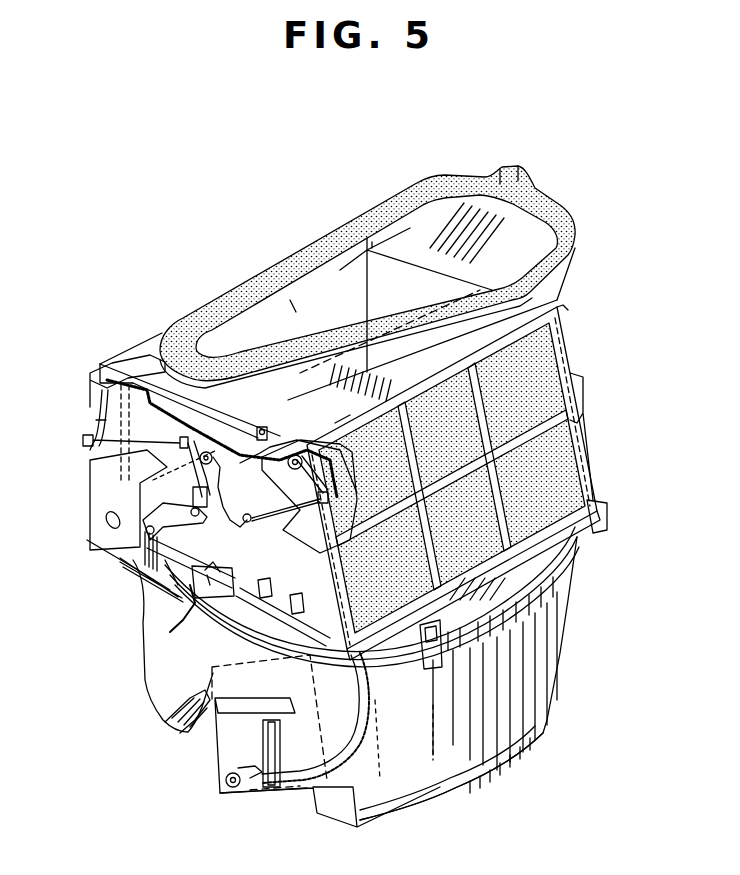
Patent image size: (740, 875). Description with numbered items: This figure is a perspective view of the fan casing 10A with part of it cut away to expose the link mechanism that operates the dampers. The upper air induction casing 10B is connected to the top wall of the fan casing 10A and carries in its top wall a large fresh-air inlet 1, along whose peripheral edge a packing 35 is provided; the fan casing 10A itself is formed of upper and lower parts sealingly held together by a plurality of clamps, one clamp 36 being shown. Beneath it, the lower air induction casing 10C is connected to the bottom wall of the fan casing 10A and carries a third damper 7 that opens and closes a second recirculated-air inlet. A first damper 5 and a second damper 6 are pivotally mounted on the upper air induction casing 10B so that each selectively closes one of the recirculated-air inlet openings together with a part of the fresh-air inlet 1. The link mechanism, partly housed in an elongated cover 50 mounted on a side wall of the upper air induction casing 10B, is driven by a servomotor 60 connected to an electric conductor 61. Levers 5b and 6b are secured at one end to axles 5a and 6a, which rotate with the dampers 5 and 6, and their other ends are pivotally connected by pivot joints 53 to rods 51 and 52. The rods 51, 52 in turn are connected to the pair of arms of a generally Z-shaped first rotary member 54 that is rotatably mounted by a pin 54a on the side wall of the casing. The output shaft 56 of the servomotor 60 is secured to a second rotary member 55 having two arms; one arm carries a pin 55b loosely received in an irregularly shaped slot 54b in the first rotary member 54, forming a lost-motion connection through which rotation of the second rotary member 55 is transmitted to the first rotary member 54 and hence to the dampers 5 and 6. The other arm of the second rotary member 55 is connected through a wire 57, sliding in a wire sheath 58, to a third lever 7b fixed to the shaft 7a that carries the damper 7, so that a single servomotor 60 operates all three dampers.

The fresh-air inlet 1 is at (375, 232).
The first damper 5 is at (562, 345).
The axle 5a is at (340, 424).
The lever 5b is at (303, 473).
The second damper 6 is at (293, 307).
The axle 6a is at (98, 398).
The lever 6b is at (95, 430).
The third damper 7 is at (210, 680).
The shaft 7a is at (236, 788).
The third lever 7b is at (240, 770).
The fan casing 10A is at (555, 650).
The upper air induction casing 10B is at (405, 372).
The lower air induction casing 10C is at (522, 763).
The packing 35 is at (560, 207).
The clamp 36 is at (430, 668).
The elongated cover 50 is at (106, 374).
The rod 51 is at (287, 530).
The rod 52 is at (105, 492).
The pivot joint 53 is at (84, 447).
The first rotary member 54 is at (200, 472).
The shaft or pin 54a is at (275, 433).
The slot or hole 54b is at (262, 516).
The second rotary member 55 is at (145, 567).
The pin 55b is at (285, 577).
The output shaft 56 is at (125, 550).
The wire 57 is at (192, 582).
The wire sheath 58 is at (347, 744).
The servomotor 60 is at (167, 588).
The electric conductor 61 is at (192, 620).